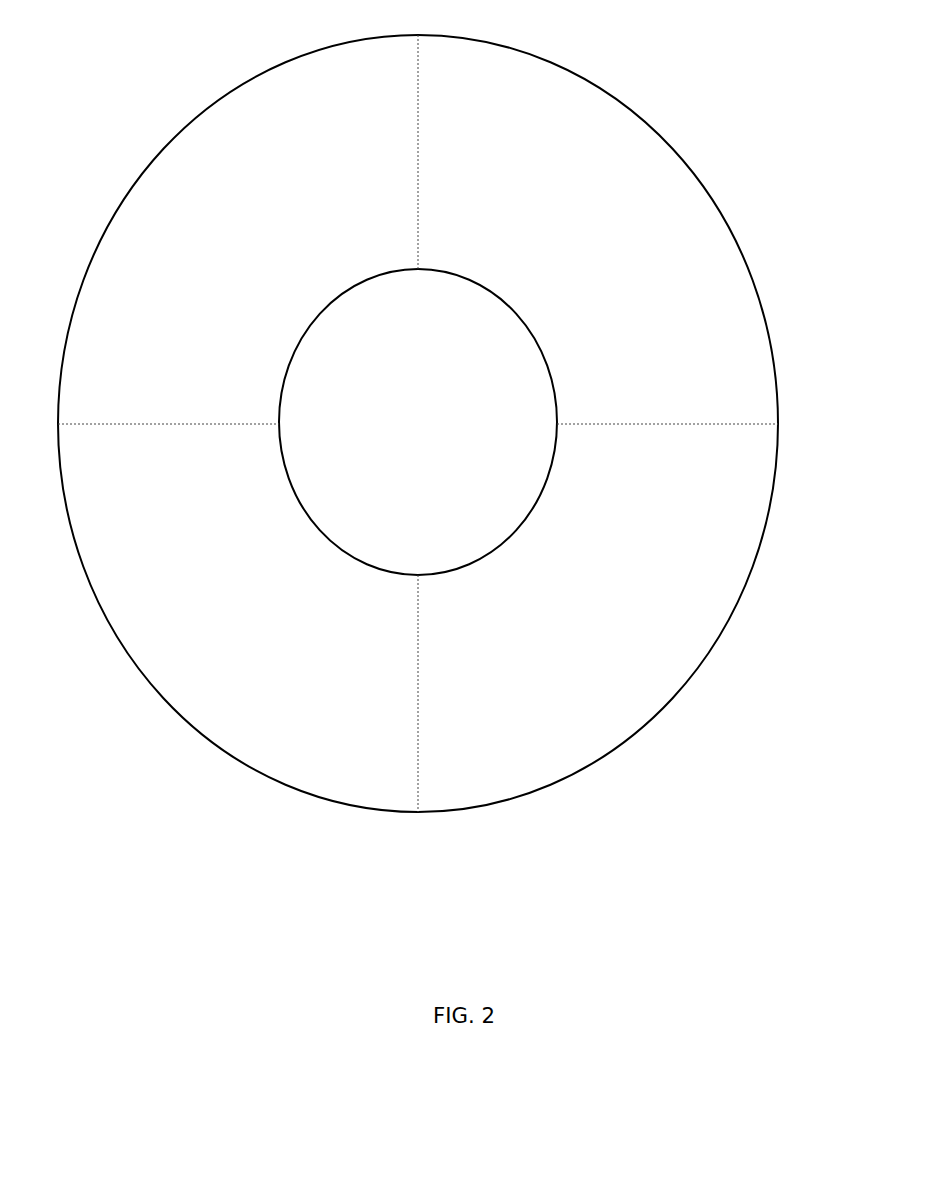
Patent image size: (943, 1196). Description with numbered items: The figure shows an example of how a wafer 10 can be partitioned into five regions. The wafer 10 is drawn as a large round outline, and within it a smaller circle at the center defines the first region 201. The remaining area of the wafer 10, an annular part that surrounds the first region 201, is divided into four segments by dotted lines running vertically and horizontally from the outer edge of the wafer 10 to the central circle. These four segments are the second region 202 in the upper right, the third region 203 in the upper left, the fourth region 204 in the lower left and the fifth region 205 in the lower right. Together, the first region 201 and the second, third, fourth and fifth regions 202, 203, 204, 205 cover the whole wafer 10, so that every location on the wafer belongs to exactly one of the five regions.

The wafer 10 is at (676, 148).
The first region 201 is at (439, 434).
The second region 202 is at (625, 260).
The third region 203 is at (303, 230).
The fourth region 204 is at (287, 626).
The fifth region 205 is at (615, 588).